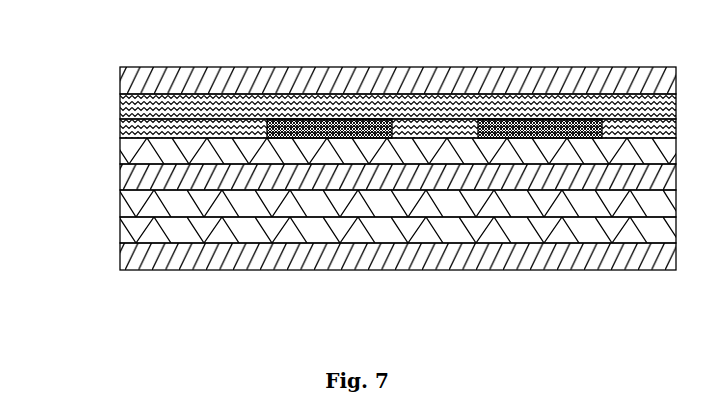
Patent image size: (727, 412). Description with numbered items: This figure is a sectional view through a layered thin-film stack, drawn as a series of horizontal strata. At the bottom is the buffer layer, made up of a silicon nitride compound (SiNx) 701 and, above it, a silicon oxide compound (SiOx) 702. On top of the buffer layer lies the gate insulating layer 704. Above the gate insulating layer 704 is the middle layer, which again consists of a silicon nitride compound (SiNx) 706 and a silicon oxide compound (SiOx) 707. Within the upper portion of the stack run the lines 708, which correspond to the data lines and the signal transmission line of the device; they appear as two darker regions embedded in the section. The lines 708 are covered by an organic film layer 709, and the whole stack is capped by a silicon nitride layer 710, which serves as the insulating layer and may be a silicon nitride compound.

The silicon nitride compound (SiNx) 701 is at (120, 260).
The silicon oxide compound (SiOx) 702 is at (120, 228).
The gate insulating layer 704 is at (120, 210).
The silicon nitride compound (SiNx) 706 is at (120, 183).
The silicon oxide compound (SiOx) 707 is at (120, 157).
The lines 708 is at (120, 113).
The organic film layer 709 is at (485, 130).
The silicon nitride layer 710 is at (120, 85).